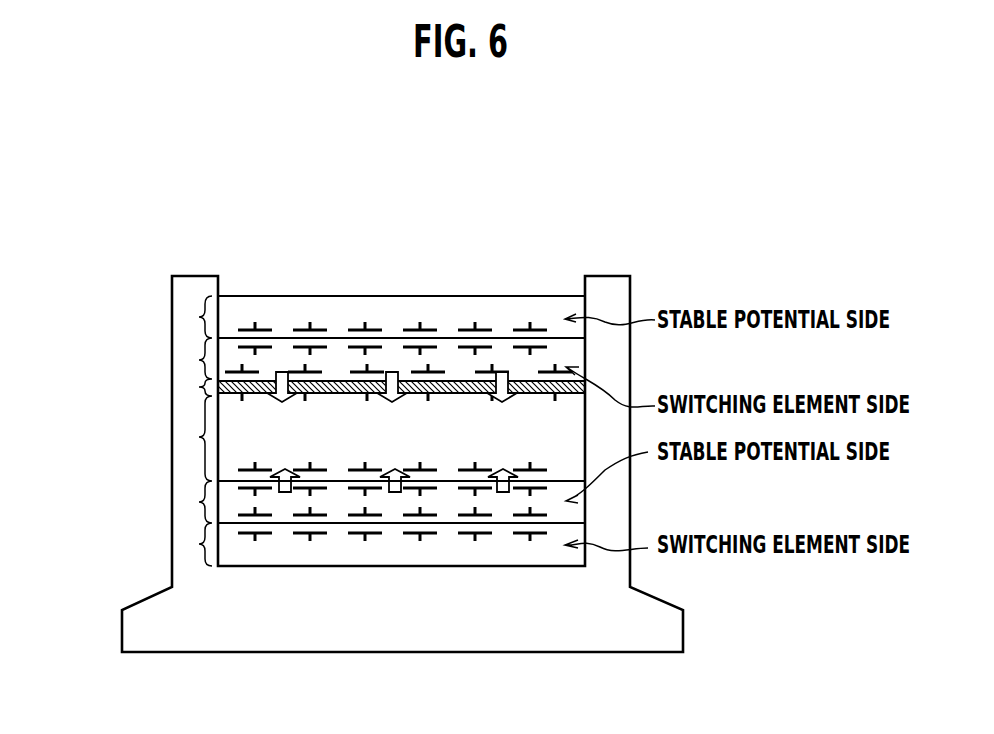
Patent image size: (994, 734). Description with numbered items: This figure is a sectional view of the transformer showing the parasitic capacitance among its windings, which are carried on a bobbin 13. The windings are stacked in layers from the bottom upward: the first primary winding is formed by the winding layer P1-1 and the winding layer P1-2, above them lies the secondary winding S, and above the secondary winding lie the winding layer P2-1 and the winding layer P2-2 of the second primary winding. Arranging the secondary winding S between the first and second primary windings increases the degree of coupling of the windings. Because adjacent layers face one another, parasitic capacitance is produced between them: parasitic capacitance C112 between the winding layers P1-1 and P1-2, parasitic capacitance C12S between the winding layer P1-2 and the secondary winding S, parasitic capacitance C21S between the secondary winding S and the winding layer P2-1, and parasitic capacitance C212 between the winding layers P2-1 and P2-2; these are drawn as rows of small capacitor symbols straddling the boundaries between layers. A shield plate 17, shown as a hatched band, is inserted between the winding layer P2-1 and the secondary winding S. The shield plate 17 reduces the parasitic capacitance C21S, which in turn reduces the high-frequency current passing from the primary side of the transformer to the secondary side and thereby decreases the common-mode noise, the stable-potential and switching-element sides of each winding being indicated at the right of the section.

The bobbin 13 is at (672, 628).
The shield plate 17 is at (203, 387).
The secondary winding S is at (203, 437).
The winding layer P2-2 is at (203, 317).
The winding layer P2-1 is at (203, 360).
The winding layer P1-2 is at (203, 502).
The winding layer P1-1 is at (203, 544).
The parasitic capacitance C212 is at (533, 330).
The parasitic capacitance C21S is at (586, 367).
The parasitic capacitance C12S is at (540, 490).
The parasitic capacitance C112 is at (538, 541).